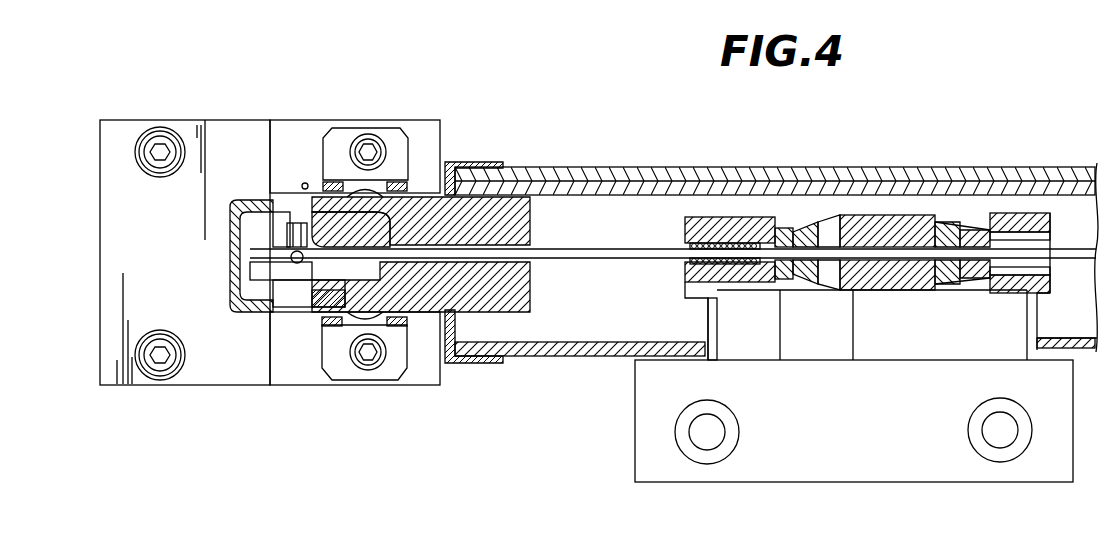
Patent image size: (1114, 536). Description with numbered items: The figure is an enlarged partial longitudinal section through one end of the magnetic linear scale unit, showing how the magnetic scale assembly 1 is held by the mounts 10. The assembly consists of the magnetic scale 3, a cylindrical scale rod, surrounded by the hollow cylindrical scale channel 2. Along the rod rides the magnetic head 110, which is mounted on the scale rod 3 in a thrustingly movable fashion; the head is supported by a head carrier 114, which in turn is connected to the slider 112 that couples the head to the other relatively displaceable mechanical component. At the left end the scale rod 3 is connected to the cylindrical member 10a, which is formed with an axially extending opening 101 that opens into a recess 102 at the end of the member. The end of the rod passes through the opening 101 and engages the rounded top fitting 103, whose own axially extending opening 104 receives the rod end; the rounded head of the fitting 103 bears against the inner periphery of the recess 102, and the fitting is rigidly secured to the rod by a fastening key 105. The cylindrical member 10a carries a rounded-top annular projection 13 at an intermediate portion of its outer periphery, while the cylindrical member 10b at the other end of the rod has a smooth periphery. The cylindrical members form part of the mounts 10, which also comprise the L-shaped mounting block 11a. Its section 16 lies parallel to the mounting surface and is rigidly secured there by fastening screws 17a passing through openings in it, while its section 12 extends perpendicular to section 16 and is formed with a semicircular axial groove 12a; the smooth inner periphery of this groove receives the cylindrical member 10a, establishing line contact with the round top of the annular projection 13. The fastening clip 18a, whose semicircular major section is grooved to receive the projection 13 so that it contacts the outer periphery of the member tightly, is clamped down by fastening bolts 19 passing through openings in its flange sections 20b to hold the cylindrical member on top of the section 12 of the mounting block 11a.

The magnetic scale assembly 1 is at (776, 229).
The scale channel 2 is at (693, 166).
The magnetic scale 3 is at (602, 250).
The mounts 10 is at (250, 247).
The cylindrical member 10a is at (290, 312).
The cylindrical member 10b is at (491, 162).
The mounting block 11a is at (298, 378).
The section 12 is at (422, 126).
The semicircular groove 12a is at (306, 182).
The annular projection 13 is at (385, 180).
The section 16 is at (103, 268).
The fastening screw 17a is at (160, 150).
The fastening clip 18a is at (408, 338).
The fastening bolt 19 is at (350, 357).
The flange section 20b is at (388, 130).
The axially extending opening 101 is at (492, 238).
The recess 102 is at (368, 312).
The rounded top fitting 103 is at (323, 233).
The axially extending opening 104 is at (246, 262).
The fastening key 105 is at (297, 232).
The magnetic head 110 is at (892, 214).
The slider 112 is at (967, 472).
The head carrier 114 is at (998, 213).